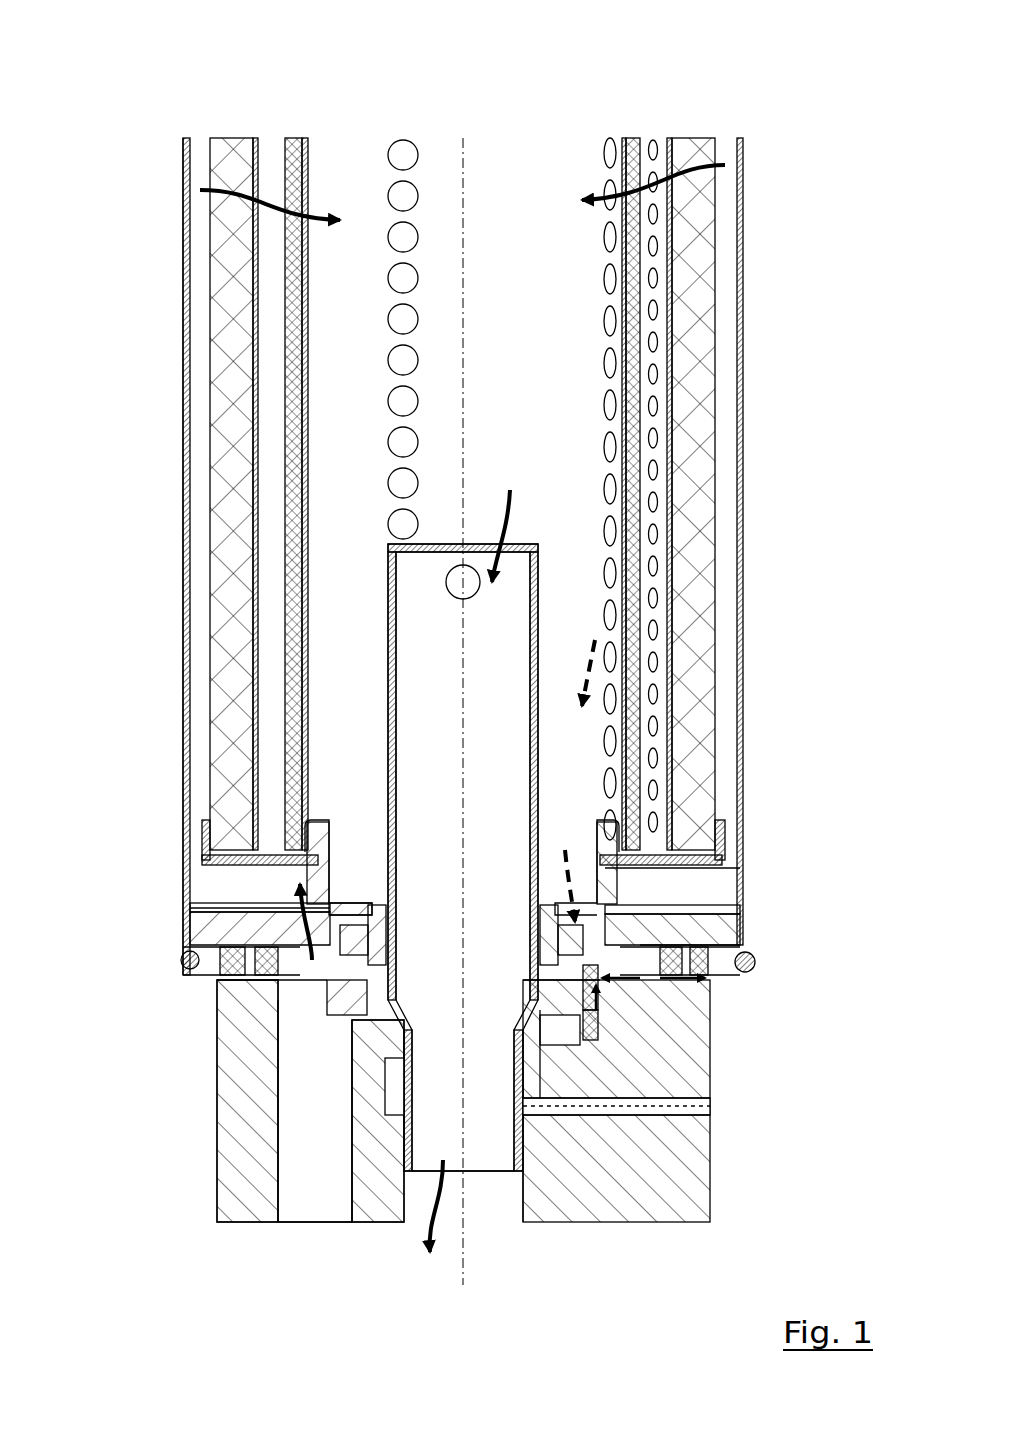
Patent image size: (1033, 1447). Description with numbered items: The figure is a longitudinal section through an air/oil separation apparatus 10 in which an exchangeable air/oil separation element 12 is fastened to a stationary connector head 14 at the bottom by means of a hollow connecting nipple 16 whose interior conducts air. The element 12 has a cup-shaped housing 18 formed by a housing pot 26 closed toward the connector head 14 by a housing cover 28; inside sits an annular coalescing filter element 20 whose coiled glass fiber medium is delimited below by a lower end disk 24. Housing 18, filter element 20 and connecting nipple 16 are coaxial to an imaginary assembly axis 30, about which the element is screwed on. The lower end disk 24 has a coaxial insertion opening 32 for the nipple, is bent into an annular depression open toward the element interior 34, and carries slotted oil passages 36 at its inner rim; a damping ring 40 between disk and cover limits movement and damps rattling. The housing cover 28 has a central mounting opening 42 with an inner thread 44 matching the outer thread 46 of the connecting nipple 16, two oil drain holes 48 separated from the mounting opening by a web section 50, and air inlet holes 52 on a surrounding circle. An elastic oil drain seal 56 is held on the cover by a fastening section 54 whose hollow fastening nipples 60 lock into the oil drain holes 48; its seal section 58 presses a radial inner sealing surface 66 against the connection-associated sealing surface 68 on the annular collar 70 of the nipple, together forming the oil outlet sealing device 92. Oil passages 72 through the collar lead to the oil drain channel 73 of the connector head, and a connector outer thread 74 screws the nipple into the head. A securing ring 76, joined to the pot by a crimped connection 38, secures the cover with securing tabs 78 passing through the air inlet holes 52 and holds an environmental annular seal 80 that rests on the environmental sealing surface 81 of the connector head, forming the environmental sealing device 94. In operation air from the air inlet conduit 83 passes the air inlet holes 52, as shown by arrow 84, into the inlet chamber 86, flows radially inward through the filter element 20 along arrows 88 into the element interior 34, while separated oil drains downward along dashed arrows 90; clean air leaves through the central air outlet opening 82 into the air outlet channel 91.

The air/oil separation apparatus 10 is at (64, 72).
The air/oil separation element 12 is at (183, 172).
The connector head 14 is at (212, 1216).
The connecting nipple 16 is at (518, 582).
The housing 18 is at (183, 407).
The filter element 20 is at (208, 282).
The lower end disk 24 is at (725, 836).
The housing pot 26 is at (737, 235).
The housing cover 28 is at (228, 962).
The assembly axis 30 is at (465, 262).
The insertion opening 32 is at (372, 903).
The element interior 34 is at (541, 205).
The passages 36 is at (346, 905).
The crimped connection 38 is at (752, 962).
The damping ring 40 is at (612, 889).
The mounting opening 42 is at (556, 900).
The inner thread 44 is at (548, 948).
The outer thread 46 is at (386, 930).
The oil drain holes 48 is at (620, 982).
The web section 50 is at (545, 926).
The air inlet holes 52 is at (296, 936).
The fastening section 54 is at (386, 965).
The oil drain seal 56 is at (616, 992).
The seal section 58 is at (292, 985).
The fastening nipples 60 is at (300, 990).
The radial inner sealing surface 66 is at (246, 996).
The connection-associated sealing surface 68 is at (602, 1012).
The annular collar 70 is at (340, 1012).
The connection-associated oil passages 72 is at (355, 1025).
The oil drain channel 73 is at (606, 1012).
The connector outer thread 74 is at (546, 1180).
The securing ring 76 is at (708, 968).
The securing tabs 78 is at (322, 912).
The environmental annular seal 80 is at (702, 945).
The environmental sealing surface 81 is at (620, 978).
The air outlet opening 82 is at (451, 873).
The air inlet conduit 83 is at (300, 1206).
The arrow 84 is at (300, 905).
The inlet chamber 86 is at (620, 872).
The arrows 88 is at (688, 165).
The dashed arrows 90 is at (600, 666).
The air outlet channel 91 is at (490, 1206).
The oil outlet sealing device 92 is at (653, 1104).
The environmental sealing device 94 is at (706, 978).